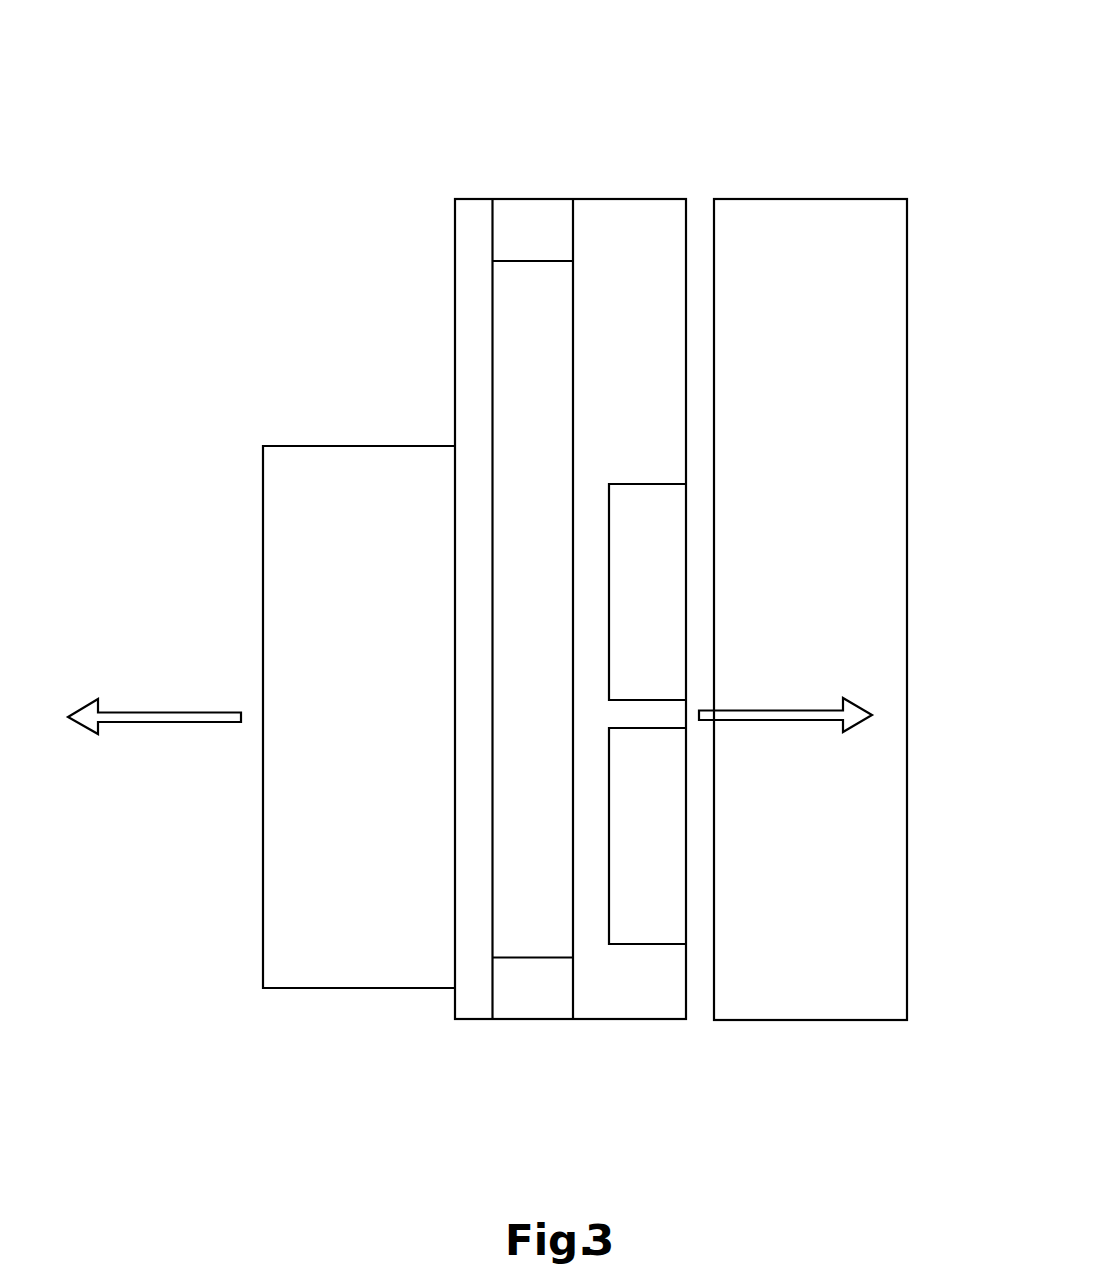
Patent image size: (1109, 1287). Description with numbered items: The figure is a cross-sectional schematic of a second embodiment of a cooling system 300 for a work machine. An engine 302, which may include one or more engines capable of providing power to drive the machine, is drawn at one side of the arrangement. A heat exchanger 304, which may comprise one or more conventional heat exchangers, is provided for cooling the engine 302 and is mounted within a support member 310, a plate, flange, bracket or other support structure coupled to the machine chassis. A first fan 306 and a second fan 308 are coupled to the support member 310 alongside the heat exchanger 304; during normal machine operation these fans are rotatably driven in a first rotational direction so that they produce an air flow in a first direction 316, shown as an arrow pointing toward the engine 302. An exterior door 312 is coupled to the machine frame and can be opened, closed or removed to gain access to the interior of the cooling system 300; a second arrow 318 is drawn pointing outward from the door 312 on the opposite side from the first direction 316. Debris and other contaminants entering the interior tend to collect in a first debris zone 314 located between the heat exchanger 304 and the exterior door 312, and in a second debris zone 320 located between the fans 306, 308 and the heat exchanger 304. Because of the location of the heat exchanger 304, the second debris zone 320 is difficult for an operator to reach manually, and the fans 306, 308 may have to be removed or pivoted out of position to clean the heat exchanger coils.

The cooling system 300 is at (904, 118).
The engine 302 is at (810, 1020).
The heat exchanger 304 is at (530, 947).
The first fan 306 is at (644, 931).
The second fan 308 is at (646, 505).
The support member 310 is at (686, 227).
The exterior door 312 is at (262, 507).
The first debris zone 314 is at (416, 510).
The first direction 316 is at (777, 710).
The second movement direction 318 is at (165, 712).
The second debris zone 320 is at (631, 270).